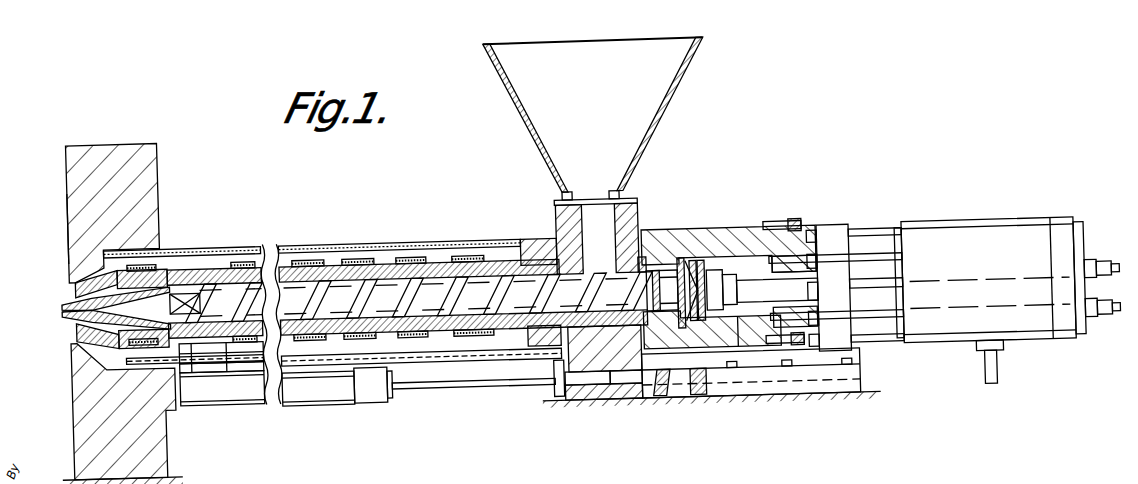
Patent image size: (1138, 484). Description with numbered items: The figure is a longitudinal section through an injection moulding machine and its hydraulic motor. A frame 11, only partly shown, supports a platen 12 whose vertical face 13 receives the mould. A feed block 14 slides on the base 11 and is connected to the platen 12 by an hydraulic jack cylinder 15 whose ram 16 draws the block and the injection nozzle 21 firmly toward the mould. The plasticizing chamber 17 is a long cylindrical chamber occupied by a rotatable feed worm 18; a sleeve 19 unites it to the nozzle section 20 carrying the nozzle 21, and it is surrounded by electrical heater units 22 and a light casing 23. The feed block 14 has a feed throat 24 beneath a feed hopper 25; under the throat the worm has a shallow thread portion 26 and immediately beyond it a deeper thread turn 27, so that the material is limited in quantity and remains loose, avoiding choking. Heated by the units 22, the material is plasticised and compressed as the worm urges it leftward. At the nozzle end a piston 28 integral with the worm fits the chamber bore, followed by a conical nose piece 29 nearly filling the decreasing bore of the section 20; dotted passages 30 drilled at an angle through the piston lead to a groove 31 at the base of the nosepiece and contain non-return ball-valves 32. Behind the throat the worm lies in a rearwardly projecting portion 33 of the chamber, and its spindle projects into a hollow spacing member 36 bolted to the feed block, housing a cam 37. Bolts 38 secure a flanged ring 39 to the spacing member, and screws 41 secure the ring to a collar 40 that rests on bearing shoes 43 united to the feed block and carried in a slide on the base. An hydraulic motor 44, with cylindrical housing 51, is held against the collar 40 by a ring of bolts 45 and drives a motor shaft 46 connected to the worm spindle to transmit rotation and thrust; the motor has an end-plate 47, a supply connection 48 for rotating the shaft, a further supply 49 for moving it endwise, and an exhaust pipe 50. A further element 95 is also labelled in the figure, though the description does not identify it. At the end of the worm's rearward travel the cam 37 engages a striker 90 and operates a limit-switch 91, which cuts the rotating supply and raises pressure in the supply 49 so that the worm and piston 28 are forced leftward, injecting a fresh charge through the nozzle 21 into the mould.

The frame 11 is at (166, 477).
The platen 12 is at (140, 182).
The vertical face 13 is at (68, 220).
The feed block 14 is at (633, 217).
The hydraulic jack cylinder 15 is at (365, 393).
The ram 16 is at (415, 383).
The plasticizing chamber 17 is at (413, 260).
The feed worm 18 is at (440, 292).
The sleeve 19 is at (333, 264).
The nozzle section 20 is at (134, 270).
The injection nozzle 21 is at (95, 312).
The electrical heater units 22 is at (248, 262).
The light casing 23 is at (486, 244).
The feed throat 24 is at (637, 198).
The feed hopper 25 is at (660, 118).
The shallow thread portion 26 is at (594, 354).
The deeper thread turn 27 is at (585, 292).
The piston 28 is at (190, 293).
The conical nose piece 29 is at (100, 344).
The passages 30 is at (247, 412).
The groove 31 is at (168, 373).
The non-return ball-valves 32 is at (202, 402).
The rearwardly projecting portion 33 is at (647, 230).
The spacing member 36 is at (755, 223).
The cam 37 is at (710, 260).
The bolts 38 is at (793, 228).
The flanged ring 39 is at (826, 232).
The collar 40 is at (863, 244).
The screws 41 is at (805, 340).
The bearing shoes 43 is at (823, 367).
The hydraulic motor 44 is at (1003, 216).
The ring of bolts 45 is at (867, 257).
The motor shaft 46 is at (762, 302).
The end-plate 47 is at (1060, 228).
The supply connection 48 is at (1109, 263).
The further supply 49 is at (1107, 314).
The exhaust pipe 50 is at (992, 363).
The cylindrical housing 51 is at (955, 323).
The striker 90 is at (718, 352).
The limit-switch 91 is at (738, 350).
The motor shaft 95 is at (877, 278).